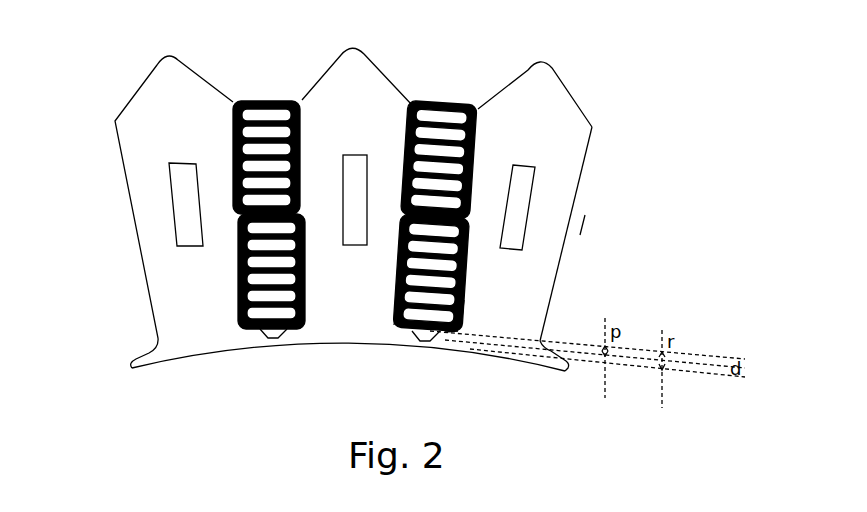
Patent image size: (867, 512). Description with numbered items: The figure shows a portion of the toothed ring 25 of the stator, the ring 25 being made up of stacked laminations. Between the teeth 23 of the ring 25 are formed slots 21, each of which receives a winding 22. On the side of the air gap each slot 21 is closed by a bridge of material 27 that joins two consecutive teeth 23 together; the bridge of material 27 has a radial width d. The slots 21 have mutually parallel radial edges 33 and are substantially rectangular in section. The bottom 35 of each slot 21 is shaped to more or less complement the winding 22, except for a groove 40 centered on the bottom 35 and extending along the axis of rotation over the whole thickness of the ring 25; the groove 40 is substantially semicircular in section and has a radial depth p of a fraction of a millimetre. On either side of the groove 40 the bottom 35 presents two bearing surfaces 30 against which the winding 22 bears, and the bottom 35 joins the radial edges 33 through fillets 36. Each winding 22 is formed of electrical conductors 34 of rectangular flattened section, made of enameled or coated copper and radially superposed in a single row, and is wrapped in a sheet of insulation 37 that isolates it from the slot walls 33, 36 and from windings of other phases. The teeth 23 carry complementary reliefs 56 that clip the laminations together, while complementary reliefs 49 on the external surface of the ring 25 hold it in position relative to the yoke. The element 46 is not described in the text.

The slot 21 is at (460, 105).
The winding 22 is at (243, 100).
The tooth 23 is at (522, 98).
The toothed ring 25 is at (557, 240).
The bridge of material 27 is at (400, 340).
The bearing surface 30 is at (458, 313).
The radial edge 33 is at (302, 133).
The electrical conductor 34 is at (275, 102).
The bottom of the slot 35 is at (390, 318).
The fillet 36 is at (460, 333).
The sheet of insulation 37 is at (302, 112).
The groove 40 is at (425, 344).
The pole shoe foot 46 is at (528, 367).
The complementary relief 49 is at (142, 110).
The complementary relief 56 is at (527, 177).